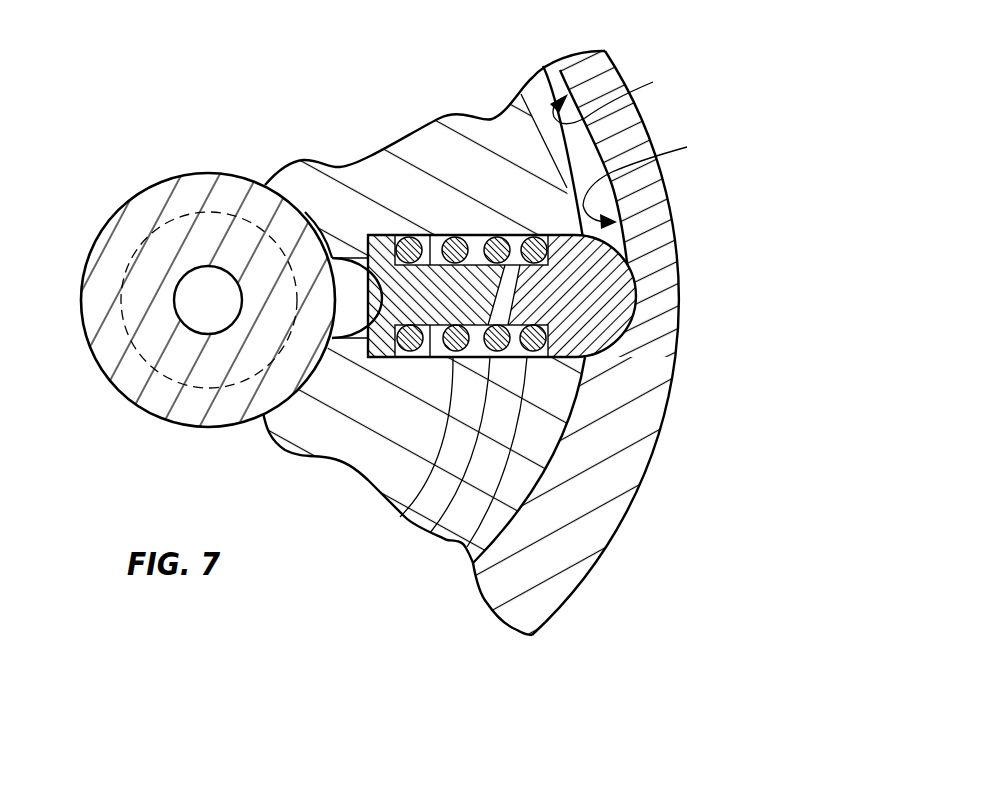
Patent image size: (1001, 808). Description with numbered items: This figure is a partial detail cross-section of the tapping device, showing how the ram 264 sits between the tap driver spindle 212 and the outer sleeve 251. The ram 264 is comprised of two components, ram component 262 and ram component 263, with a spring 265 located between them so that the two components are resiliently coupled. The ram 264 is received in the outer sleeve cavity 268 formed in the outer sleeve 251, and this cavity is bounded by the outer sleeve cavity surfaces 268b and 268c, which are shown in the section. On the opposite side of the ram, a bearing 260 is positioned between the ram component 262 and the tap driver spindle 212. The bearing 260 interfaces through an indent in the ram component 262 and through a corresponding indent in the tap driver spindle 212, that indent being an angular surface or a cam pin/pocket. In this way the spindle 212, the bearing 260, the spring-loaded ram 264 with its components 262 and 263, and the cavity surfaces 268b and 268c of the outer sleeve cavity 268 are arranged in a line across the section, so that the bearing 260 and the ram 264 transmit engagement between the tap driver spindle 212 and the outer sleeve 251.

The tap driver spindle 212 is at (128, 370).
The outer sleeve 251 is at (610, 547).
The bearing 260 is at (353, 307).
The ram component 262 is at (562, 240).
The ram component 263 is at (597, 320).
The ram 264 is at (512, 302).
The spring 265 is at (450, 542).
The outer sleeve cavity 268 is at (583, 158).
The outer sleeve cavity surface 268b is at (710, 85).
The outer sleeve cavity surface 268c is at (740, 155).